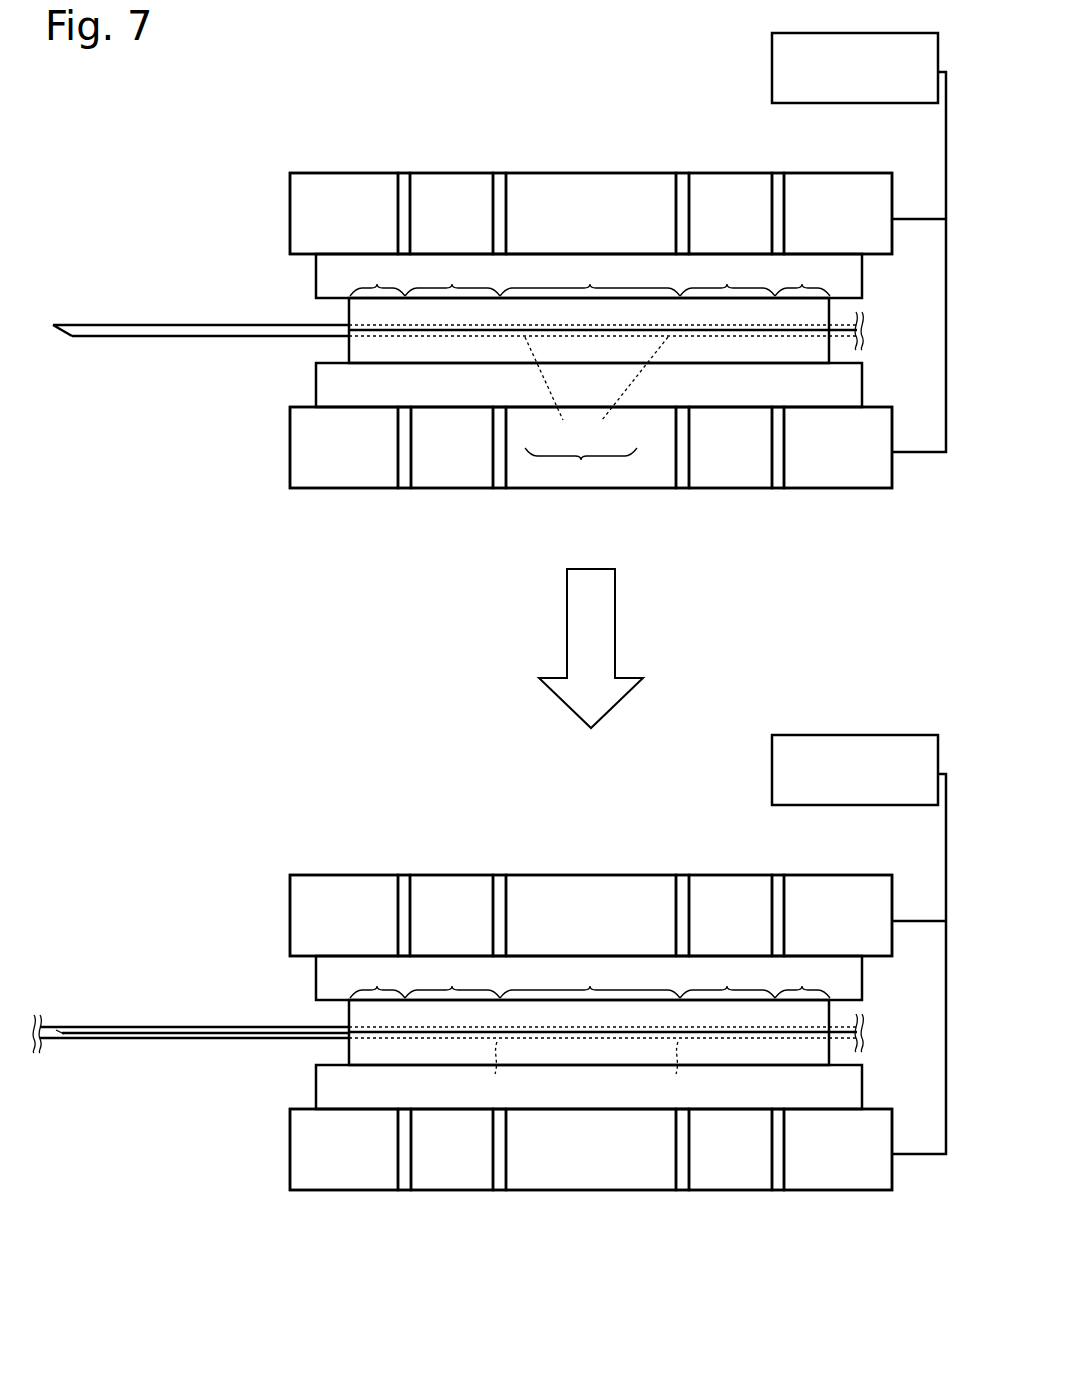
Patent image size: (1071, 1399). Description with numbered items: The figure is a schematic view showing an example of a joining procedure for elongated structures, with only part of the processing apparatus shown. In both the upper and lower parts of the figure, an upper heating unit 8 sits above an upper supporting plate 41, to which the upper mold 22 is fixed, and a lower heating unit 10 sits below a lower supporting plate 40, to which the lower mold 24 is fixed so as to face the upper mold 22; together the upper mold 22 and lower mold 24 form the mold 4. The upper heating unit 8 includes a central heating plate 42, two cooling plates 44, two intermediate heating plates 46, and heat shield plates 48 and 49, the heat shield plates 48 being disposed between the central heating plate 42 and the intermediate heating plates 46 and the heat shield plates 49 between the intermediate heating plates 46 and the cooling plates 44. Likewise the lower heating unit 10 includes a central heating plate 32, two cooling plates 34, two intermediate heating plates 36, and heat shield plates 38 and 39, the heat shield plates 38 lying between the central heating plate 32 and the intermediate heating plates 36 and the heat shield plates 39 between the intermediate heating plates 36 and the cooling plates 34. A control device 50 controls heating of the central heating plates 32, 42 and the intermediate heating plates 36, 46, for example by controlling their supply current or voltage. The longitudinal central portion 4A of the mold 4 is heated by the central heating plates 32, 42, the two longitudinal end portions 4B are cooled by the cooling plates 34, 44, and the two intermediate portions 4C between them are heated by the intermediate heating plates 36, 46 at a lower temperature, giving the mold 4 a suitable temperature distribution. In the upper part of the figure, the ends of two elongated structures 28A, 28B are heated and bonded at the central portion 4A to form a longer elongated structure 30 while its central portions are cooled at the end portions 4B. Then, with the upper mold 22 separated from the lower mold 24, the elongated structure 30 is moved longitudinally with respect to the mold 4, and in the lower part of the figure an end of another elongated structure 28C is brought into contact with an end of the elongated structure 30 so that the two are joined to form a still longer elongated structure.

The mold 4 is at (908, 296).
The longitudinal central portion of the mold 4A is at (590, 627).
The longitudinal end portions of the mold 4B is at (590, 627).
The intermediate portions of the mold 4C is at (590, 627).
The upper heating unit 8 is at (282, 206).
The lower heating unit 10 is at (282, 448).
The upper mold 22 is at (822, 316).
The lower mold 24 is at (822, 352).
The elongated structure 28A is at (548, 392).
The elongated structure 28B is at (630, 392).
The elongated structure 28C is at (652, 1071).
The elongated structure 30 is at (552, 774).
The central heating plate 32 is at (578, 490).
The cooling plates 34 is at (333, 490).
The intermediate heating plates 36 is at (446, 490).
The heat shield plates 38 is at (499, 490).
The heat shield plates 39 is at (405, 490).
The lower supporting plate 40 is at (327, 390).
The upper supporting plate 41 is at (331, 285).
The central heating plate 42 is at (578, 186).
The cooling plates 44 is at (334, 186).
The intermediate heating plates 46 is at (441, 186).
The heat shield plates 48 is at (500, 184).
The heat shield plates 49 is at (406, 184).
The control device 50 is at (772, 73).